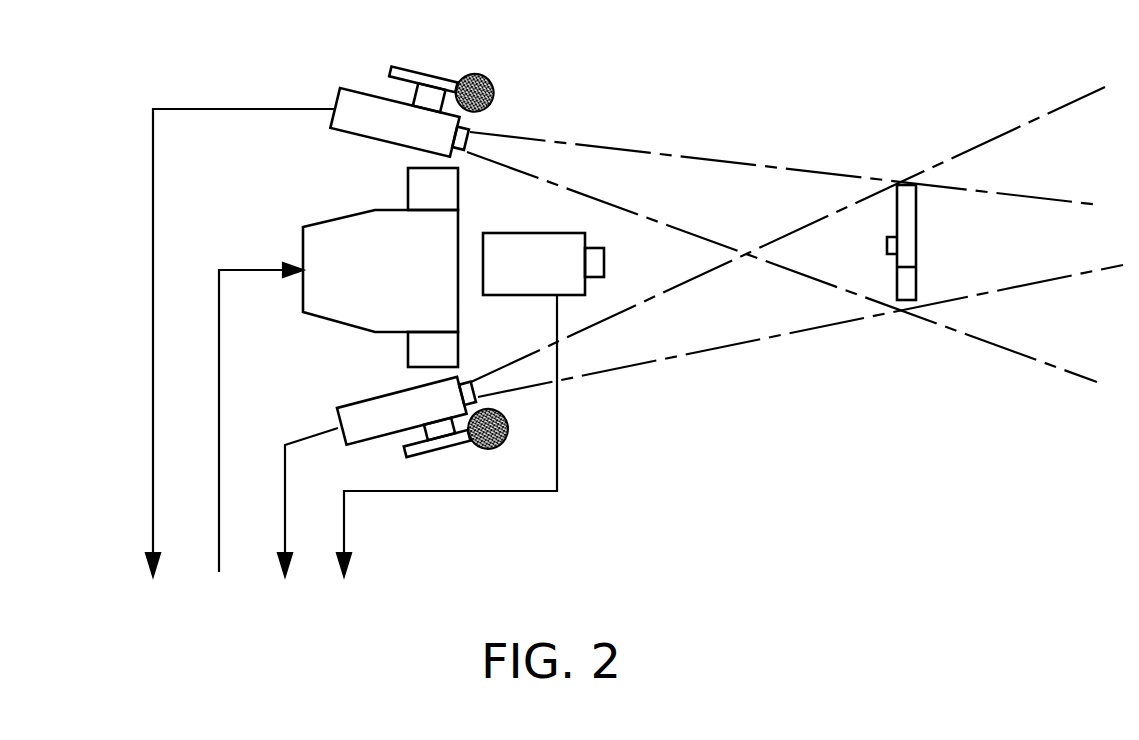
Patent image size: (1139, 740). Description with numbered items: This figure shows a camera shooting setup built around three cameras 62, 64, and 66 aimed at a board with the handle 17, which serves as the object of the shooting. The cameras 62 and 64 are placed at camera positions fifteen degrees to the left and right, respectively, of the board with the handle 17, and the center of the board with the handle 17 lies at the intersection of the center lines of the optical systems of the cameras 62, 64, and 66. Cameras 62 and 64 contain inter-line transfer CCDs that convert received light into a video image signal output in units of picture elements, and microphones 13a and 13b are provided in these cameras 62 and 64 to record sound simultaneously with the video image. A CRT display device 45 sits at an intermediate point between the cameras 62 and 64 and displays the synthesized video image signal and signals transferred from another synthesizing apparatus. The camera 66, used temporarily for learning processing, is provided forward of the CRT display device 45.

The camera 62 is at (371, 96).
The microphone 13a is at (447, 80).
The CRT display device 45 is at (326, 222).
The camera 66 is at (545, 233).
The camera 64 is at (387, 394).
The microphone 13b is at (437, 451).
The board with the handle 17 is at (917, 232).